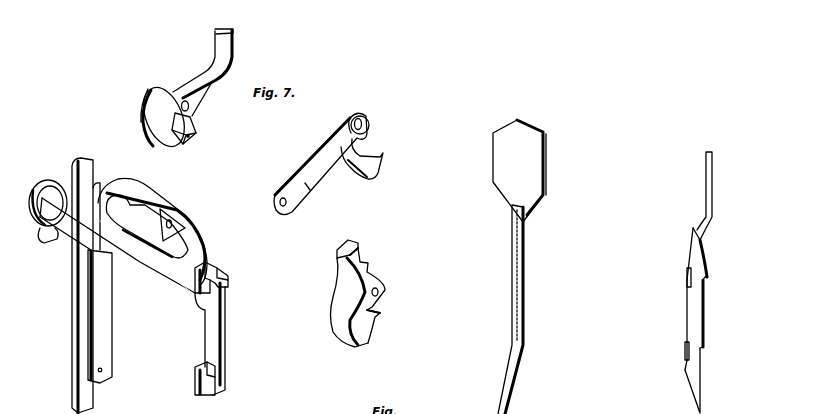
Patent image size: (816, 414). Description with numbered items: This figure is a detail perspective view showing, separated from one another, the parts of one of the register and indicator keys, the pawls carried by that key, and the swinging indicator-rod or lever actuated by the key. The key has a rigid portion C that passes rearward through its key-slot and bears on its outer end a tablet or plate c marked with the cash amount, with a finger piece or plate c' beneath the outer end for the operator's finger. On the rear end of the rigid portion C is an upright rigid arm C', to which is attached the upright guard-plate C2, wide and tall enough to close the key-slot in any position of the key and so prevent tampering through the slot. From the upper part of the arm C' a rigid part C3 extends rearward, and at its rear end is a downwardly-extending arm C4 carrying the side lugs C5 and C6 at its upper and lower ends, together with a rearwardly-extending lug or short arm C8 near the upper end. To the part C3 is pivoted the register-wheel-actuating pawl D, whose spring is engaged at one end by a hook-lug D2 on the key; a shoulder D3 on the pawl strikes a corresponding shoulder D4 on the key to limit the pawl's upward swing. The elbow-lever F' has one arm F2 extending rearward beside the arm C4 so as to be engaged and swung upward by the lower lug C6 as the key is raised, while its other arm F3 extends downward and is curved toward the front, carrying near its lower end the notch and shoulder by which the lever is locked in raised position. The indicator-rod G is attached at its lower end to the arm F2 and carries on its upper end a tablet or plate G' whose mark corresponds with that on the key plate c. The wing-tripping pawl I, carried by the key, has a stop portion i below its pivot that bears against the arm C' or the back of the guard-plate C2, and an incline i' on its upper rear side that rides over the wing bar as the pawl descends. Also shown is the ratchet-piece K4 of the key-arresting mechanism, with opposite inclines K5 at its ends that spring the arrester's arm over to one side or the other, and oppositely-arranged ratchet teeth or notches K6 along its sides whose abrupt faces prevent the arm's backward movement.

The register-wheel-actuating pawl D is at (213, 83).
The hook-lug D2 is at (159, 224).
The shoulder on the pawl D3 is at (197, 133).
The shoulder on the key D4 is at (197, 229).
The tablet or plate c is at (48, 194).
The finger piece or plate c' is at (48, 247).
The rigid portion of the key C is at (117, 245).
The upright rigid arm C' is at (111, 283).
The upright guard-plate C2 is at (78, 333).
The rearwardly-extending rigid part C3 is at (147, 268).
The downwardly-extending arm C4 is at (212, 346).
The upper side lug C5 is at (196, 276).
The lower side lug C6 is at (200, 396).
The rearwardly-extending lug or short arm C8 is at (230, 284).
The elbow-lever F' is at (321, 163).
The lever arm F2 is at (300, 183).
The downward lever arm F3 is at (372, 152).
The wing-tripping pawl I is at (364, 293).
The stop portion of the pawl i is at (381, 316).
The incline on the pawl i' is at (337, 259).
The indicator-rod G is at (500, 309).
The tablet or plate of the indicator-rod G' is at (533, 171).
The ratchet-piece K4 is at (705, 317).
The incline K5 is at (707, 245).
The ratchet teeth or notches K6 is at (707, 278).